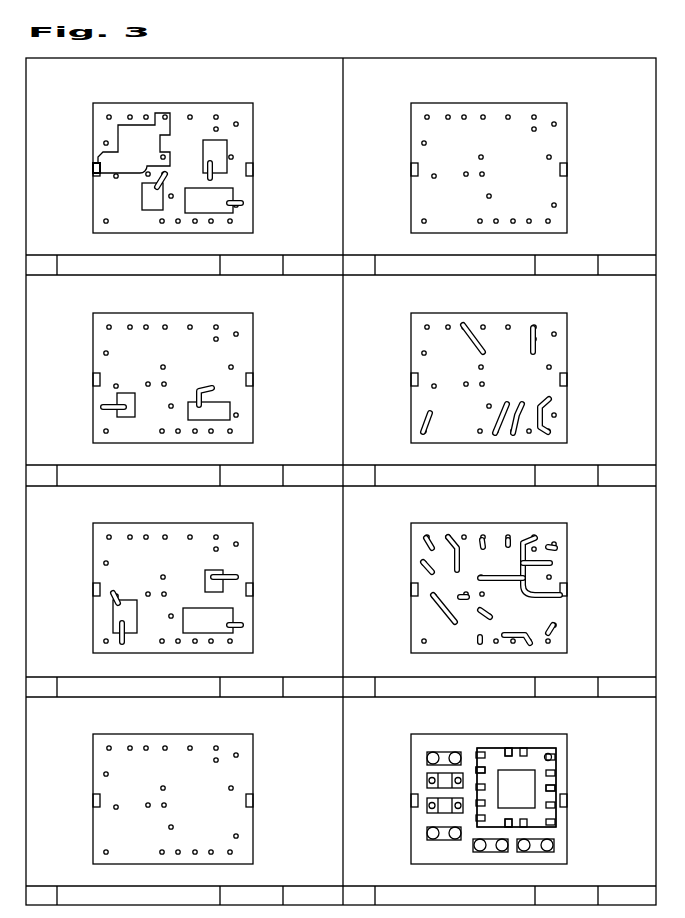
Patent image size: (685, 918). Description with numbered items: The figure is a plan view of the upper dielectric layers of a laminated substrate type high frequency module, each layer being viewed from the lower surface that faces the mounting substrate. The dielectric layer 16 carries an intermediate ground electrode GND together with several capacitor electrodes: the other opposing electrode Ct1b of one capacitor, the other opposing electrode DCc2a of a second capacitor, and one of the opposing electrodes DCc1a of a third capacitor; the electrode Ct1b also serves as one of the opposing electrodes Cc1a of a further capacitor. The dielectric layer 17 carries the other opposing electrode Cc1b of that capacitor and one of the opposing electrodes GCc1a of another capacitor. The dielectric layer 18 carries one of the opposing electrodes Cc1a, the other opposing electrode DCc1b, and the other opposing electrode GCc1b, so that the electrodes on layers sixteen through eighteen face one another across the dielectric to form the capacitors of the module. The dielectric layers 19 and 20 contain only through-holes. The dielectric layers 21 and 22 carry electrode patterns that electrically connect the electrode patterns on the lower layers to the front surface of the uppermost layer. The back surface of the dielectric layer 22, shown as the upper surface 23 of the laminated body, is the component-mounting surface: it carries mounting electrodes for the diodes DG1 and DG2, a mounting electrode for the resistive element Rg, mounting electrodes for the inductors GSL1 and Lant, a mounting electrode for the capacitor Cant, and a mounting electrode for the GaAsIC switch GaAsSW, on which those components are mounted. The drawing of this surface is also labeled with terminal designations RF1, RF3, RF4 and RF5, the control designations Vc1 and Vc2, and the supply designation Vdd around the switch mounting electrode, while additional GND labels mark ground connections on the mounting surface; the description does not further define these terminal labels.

The dielectric layer 16 is at (141, 188).
The dielectric layer 17 is at (141, 399).
The dielectric layer 18 is at (141, 609).
The dielectric layer 19 is at (141, 819).
The dielectric layer 20 is at (457, 188).
The dielectric layer 21 is at (457, 399).
The dielectric layer 22 is at (457, 609).
The dielectric layer 23 is at (457, 819).
The intermediate ground electrode GND is at (123, 127).
The opposing electrode of capacitor DCc1 DCc1a is at (227, 147).
The other opposing electrode of capacitor Ct1 Ct1b is at (234, 196).
The opposing electrode of capacitor Cc1 Cc1a is at (230, 612).
The other opposing electrode of capacitor DCc2 DCc2a is at (153, 211).
The opposing electrode of capacitor GCc1 GCc1a is at (118, 402).
The other opposing electrode of capacitor Cc1 Cc1b is at (229, 404).
The other opposing electrode of capacitor DCc1 DCc1b is at (208, 570).
The other opposing electrode of capacitor GCc1 GCc1b is at (118, 614).
The resistive element Rg is at (432, 752).
The RF terminal pad RF3 is at (478, 770).
The RF terminal pad RF4 is at (508, 748).
The GaAsIC switch GaAsSW is at (556, 747).
The RF terminal pad RF5 is at (554, 757).
The RF terminal pad RF1 is at (554, 788).
The control terminal pad Vc2 is at (554, 822).
The control terminal pad Vc1 is at (527, 823).
The diode DG2 is at (428, 780).
The diode DG1 is at (433, 807).
The inductor GSL1 is at (434, 838).
The inductor Lant is at (483, 851).
The power supply terminal pad Vdd is at (509, 828).
The capacitor Cant is at (548, 851).